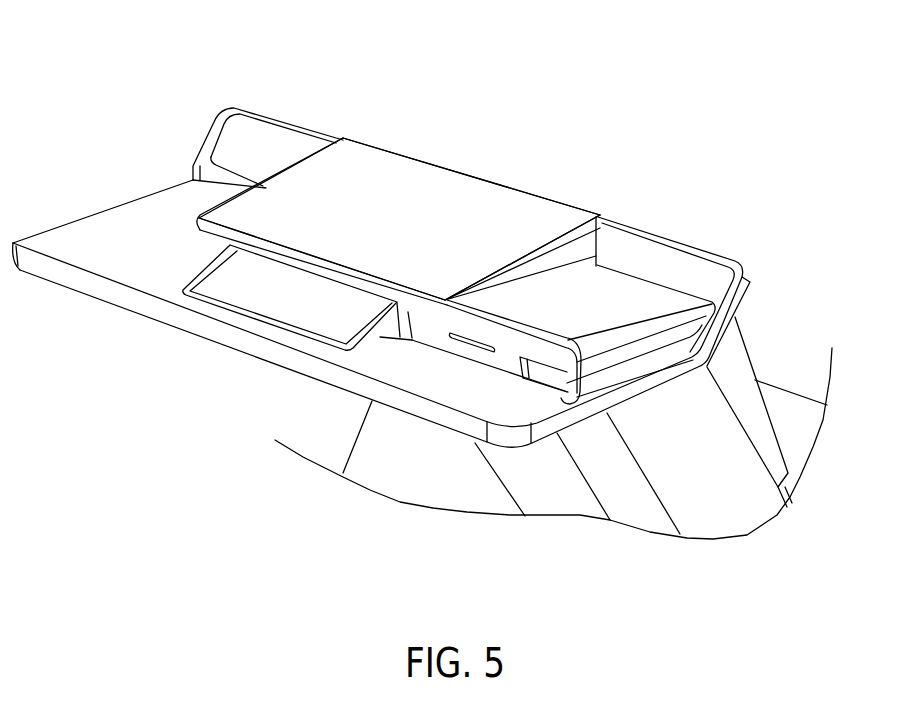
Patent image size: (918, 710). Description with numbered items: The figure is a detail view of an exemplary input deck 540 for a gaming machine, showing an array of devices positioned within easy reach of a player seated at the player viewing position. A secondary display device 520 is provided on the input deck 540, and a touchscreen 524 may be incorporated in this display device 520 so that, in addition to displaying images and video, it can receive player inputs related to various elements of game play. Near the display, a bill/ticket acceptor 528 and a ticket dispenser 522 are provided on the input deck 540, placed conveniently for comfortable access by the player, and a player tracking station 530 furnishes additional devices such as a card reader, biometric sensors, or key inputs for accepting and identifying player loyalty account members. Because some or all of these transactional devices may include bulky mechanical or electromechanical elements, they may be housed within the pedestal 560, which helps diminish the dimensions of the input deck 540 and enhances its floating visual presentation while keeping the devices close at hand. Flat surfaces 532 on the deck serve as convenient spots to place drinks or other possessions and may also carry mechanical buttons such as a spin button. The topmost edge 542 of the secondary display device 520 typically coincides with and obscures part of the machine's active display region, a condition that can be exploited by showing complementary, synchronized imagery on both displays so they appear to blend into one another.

The input deck 540 is at (112, 123).
The flat surfaces 532 is at (137, 225).
The secondary display device 520 is at (433, 221).
The touchscreen 524 is at (483, 200).
The topmost edge 542 is at (455, 163).
The player tracking station 530 is at (277, 292).
The ticket dispenser 522 is at (470, 343).
The bill/ticket acceptor 528 is at (547, 373).
The pedestal 560 is at (745, 342).